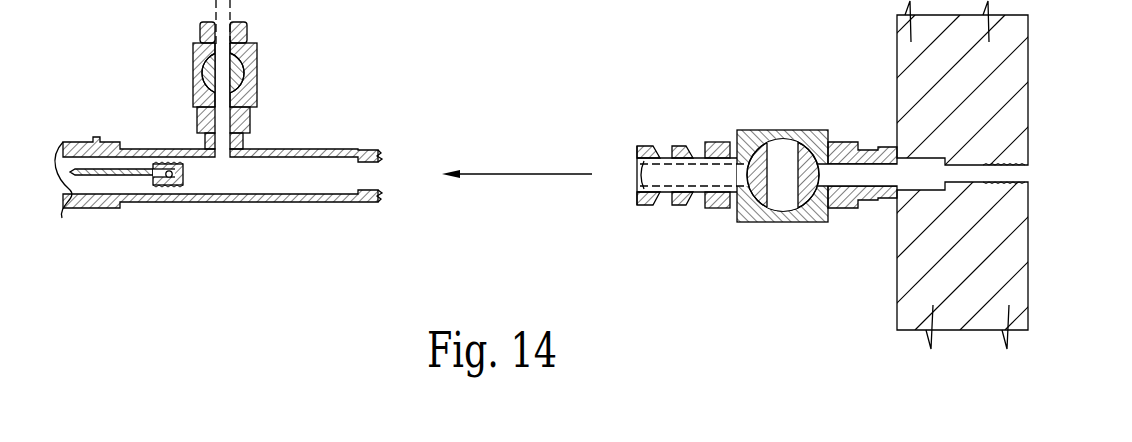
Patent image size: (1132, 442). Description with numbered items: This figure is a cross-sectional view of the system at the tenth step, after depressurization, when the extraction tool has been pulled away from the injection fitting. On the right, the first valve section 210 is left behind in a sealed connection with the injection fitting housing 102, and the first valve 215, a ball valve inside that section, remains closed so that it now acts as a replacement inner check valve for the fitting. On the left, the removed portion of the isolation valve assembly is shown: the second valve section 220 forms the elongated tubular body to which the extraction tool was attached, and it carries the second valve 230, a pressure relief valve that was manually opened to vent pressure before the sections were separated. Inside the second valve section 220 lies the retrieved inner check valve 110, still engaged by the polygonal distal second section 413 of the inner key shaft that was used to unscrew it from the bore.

The injection fitting housing 102 is at (1028, 98).
The inner check valve 110 is at (175, 185).
The first valve section 210 is at (717, 143).
The first valve 215 is at (750, 222).
The second valve section 220 is at (278, 202).
The second valve 230 is at (193, 80).
The second section of the shaft 413 is at (108, 177).